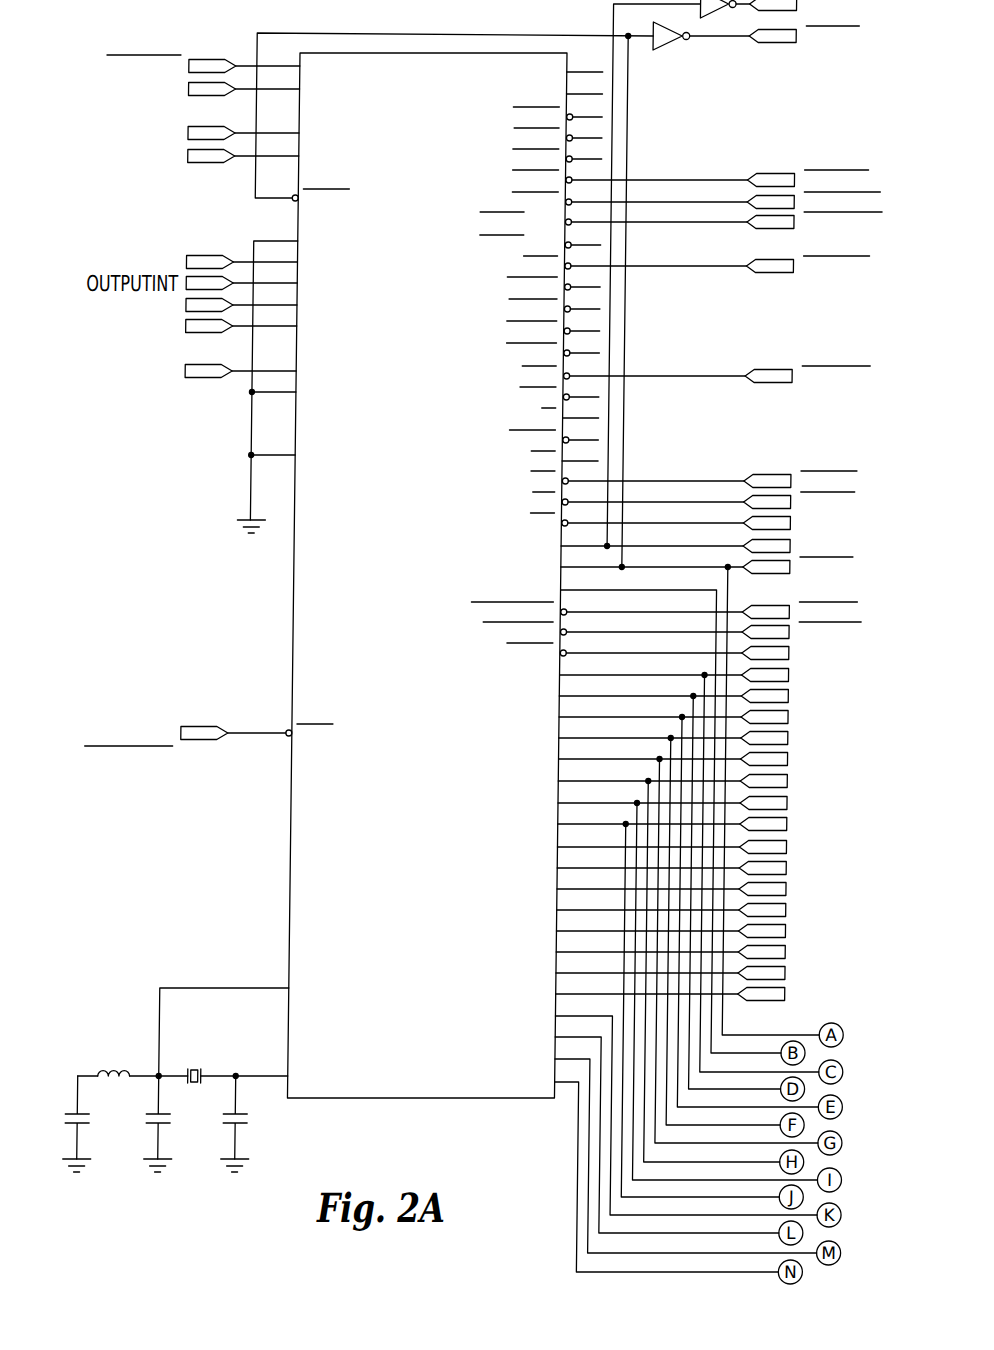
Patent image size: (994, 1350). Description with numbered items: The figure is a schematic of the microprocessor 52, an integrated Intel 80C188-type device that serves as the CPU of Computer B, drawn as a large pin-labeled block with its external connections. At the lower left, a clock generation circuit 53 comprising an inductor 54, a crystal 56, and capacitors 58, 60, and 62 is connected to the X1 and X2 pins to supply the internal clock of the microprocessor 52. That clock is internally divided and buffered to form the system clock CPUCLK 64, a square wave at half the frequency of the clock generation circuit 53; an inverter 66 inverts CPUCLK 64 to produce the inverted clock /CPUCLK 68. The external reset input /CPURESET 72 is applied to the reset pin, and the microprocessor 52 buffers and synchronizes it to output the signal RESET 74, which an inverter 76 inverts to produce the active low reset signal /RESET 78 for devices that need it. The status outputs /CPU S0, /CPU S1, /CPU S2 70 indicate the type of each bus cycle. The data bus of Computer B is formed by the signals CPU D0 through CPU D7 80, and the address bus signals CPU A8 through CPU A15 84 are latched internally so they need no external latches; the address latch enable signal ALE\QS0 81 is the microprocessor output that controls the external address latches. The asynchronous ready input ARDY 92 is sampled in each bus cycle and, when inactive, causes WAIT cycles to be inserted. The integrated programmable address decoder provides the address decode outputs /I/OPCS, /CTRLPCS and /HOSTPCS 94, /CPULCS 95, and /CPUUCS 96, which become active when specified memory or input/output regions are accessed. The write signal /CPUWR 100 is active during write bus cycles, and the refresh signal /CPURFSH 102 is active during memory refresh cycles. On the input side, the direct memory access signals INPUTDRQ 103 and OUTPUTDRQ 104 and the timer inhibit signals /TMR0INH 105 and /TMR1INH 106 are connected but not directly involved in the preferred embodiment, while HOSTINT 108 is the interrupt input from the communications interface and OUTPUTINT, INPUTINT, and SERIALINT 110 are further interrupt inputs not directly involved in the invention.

The microprocessor 52 is at (434, 510).
The clock generation circuit 53 is at (90, 1070).
The inductor 54 is at (127, 1066).
The crystal 56 is at (209, 1084).
The capacitor 58 is at (96, 1127).
The capacitor 60 is at (173, 1127).
The capacitor 62 is at (256, 1127).
The system clock CPUCLK 64 is at (878, 548).
The inverter 66 is at (717, 14).
The inverted clock /CPUCLK 68 is at (880, 5).
The status outputs /CPU S0, /CPU S1, /CPU S2 70 is at (865, 503).
The external reset input /CPURESET 72 is at (88, 733).
The reset signal RESET 74 is at (866, 573).
The inverter 76 is at (660, 52).
The active low reset signal /RESET 78 is at (876, 40).
The data bus signals CPU D0 to CPU D7 80 is at (880, 770).
The address latch enable signal ALE\QS0 81 is at (477, 590).
The address bus signals CPU A8 to CPU A15 84 is at (886, 940).
The asynchronous ready input ARDY 92 is at (132, 373).
The address decode outputs /I/OPCS, /CTRLPCS, /HOSTPCS 94 is at (887, 204).
The address decode output /CPULCS 95 is at (880, 270).
The address decode output /CPUUCS 96 is at (882, 378).
The write signal /CPUWR 100 is at (868, 614).
The refresh signal /CPURFSH 102 is at (886, 658).
The direct memory access signal INPUTDRQ 103 is at (95, 133).
The direct memory access signal OUTPUTDRQ 104 is at (80, 150).
The timer inhibit signal /TMR0INH 105 is at (138, 52).
The timer inhibit signal /TMR1INH 106 is at (105, 89).
The interrupt input HOSTINT 108 is at (110, 258).
The interrupt inputs OUTPUTINT, INPUTINT, SERIALINT 110 is at (96, 306).